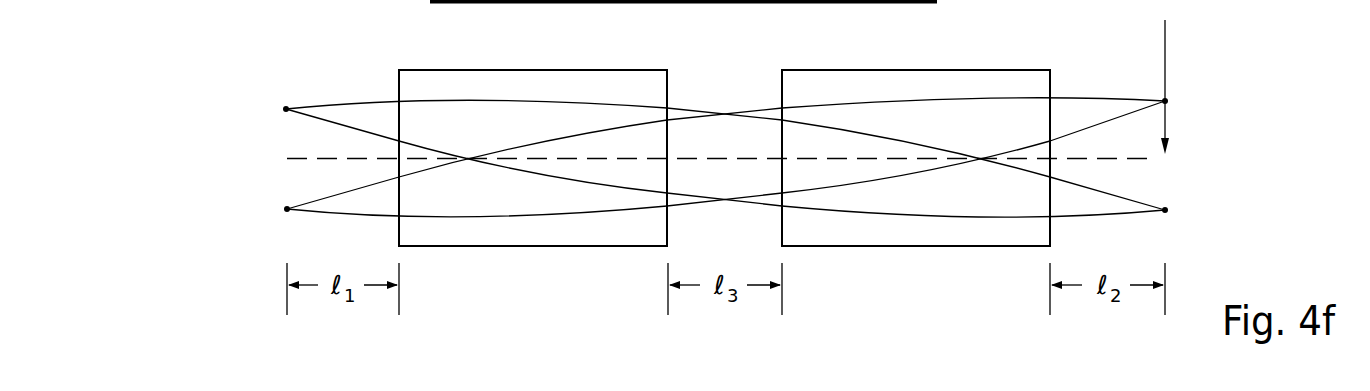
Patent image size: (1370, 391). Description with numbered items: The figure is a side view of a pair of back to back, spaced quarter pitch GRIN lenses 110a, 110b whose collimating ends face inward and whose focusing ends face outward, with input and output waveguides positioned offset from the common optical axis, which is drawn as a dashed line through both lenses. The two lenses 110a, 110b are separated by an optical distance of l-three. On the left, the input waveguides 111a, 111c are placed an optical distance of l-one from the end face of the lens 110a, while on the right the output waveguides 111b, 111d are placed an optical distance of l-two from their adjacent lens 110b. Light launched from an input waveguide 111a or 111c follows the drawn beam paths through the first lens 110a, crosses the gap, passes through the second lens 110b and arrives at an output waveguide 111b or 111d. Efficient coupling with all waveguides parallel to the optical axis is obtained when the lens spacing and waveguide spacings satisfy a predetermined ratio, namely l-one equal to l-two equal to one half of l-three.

The GRIN lens 110a is at (423, 83).
The GRIN lens 110b is at (953, 77).
The input waveguide 111a is at (420, 120).
The output waveguide 111b is at (1028, 168).
The input waveguide 111c is at (420, 168).
The output waveguide 111d is at (1029, 106).